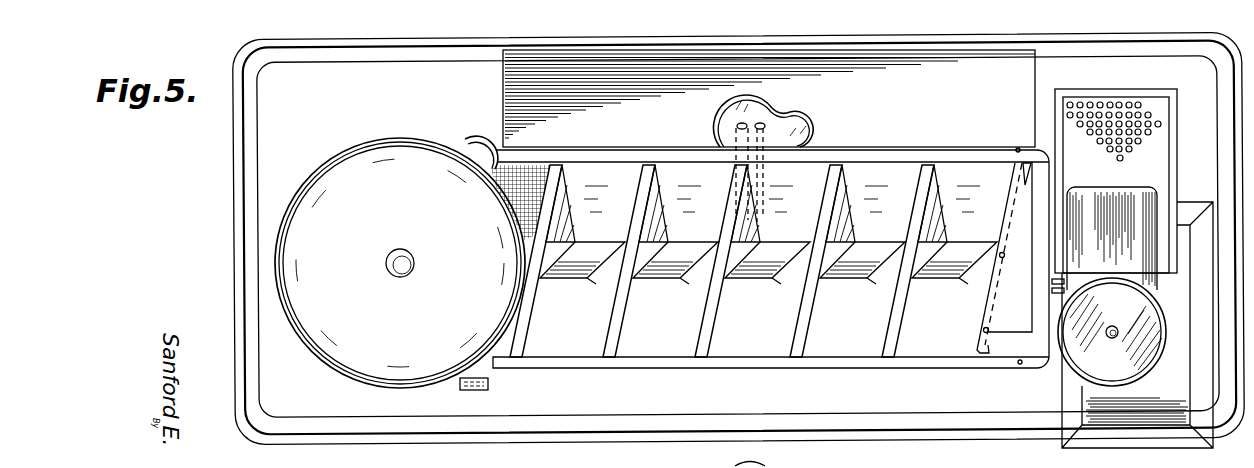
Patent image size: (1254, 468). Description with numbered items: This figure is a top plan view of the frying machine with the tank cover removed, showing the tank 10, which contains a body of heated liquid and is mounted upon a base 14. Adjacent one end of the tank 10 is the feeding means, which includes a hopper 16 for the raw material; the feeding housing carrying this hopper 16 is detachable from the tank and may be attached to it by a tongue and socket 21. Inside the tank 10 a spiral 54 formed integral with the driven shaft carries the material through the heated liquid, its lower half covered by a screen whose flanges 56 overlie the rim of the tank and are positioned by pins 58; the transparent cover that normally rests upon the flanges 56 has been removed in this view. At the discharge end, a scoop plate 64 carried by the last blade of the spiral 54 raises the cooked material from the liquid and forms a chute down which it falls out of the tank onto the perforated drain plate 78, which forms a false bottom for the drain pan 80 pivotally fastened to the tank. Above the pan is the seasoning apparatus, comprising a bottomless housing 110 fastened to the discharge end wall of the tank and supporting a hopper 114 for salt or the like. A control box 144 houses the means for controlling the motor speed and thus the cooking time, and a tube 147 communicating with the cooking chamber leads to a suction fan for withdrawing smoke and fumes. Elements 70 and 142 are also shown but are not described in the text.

The tank 10 is at (769, 260).
The base 14 is at (566, 441).
The hopper 16 is at (378, 383).
The tongue and socket 21 is at (472, 392).
The spiral 54 is at (711, 294).
The flanges 56 is at (637, 153).
The pins 58 is at (1017, 149).
The scoop plate 64 is at (1003, 254).
The shelf 70 is at (568, 274).
The perforated drain plate 78 is at (1114, 142).
The drain pan 80 is at (1132, 90).
The bottomless housing 110 is at (1152, 286).
The hopper 114 is at (1152, 370).
The frame 142 is at (1168, 432).
The control box 144 is at (912, 50).
The tube 147 is at (469, 143).